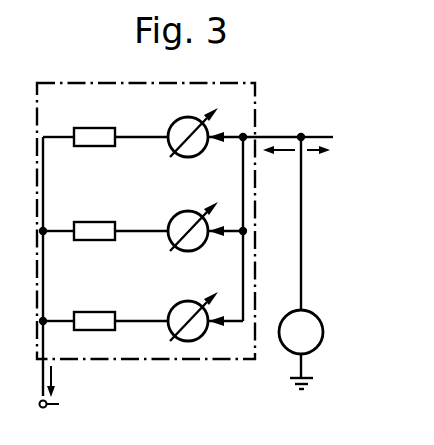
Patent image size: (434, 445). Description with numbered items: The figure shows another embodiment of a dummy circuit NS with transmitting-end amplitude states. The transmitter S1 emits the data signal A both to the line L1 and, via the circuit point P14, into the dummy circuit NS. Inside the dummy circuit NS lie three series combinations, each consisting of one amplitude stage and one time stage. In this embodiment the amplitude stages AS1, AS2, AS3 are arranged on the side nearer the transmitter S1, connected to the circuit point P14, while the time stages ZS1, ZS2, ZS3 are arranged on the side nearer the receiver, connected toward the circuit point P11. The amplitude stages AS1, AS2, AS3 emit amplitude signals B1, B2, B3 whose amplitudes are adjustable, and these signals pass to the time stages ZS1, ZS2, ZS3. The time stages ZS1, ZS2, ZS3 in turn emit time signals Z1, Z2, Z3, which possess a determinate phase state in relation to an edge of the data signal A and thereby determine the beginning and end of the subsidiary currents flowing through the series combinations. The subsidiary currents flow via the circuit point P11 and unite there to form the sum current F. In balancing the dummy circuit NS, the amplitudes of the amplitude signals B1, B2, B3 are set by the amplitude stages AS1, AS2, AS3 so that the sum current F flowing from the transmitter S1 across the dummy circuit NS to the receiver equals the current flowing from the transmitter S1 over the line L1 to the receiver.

The dummy circuit NS is at (232, 356).
The time signal Z3 is at (58, 121).
The time stage ZS3 is at (94, 123).
The amplitude signal B3 is at (141, 125).
The amplitude stage AS3 is at (205, 123).
The time signal Z2 is at (58, 218).
The time stage ZS2 is at (94, 218).
The amplitude signal B2 is at (141, 218).
The amplitude stage AS2 is at (205, 216).
The time signal Z1 is at (58, 308).
The time stage ZS1 is at (94, 308).
The amplitude signal B1 is at (141, 308).
The amplitude stage AS1 is at (205, 306).
The circuit point P14 is at (274, 125).
The line L1 is at (317, 124).
The data signal A is at (296, 164).
The transmitter S1 is at (301, 263).
The sum current F is at (55, 378).
The circuit point P11 is at (65, 403).